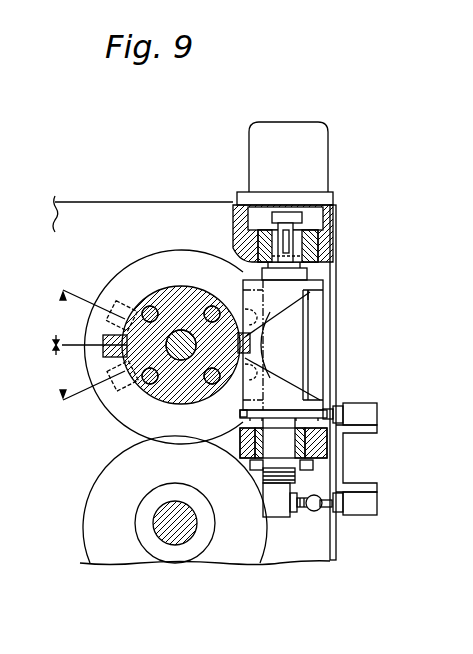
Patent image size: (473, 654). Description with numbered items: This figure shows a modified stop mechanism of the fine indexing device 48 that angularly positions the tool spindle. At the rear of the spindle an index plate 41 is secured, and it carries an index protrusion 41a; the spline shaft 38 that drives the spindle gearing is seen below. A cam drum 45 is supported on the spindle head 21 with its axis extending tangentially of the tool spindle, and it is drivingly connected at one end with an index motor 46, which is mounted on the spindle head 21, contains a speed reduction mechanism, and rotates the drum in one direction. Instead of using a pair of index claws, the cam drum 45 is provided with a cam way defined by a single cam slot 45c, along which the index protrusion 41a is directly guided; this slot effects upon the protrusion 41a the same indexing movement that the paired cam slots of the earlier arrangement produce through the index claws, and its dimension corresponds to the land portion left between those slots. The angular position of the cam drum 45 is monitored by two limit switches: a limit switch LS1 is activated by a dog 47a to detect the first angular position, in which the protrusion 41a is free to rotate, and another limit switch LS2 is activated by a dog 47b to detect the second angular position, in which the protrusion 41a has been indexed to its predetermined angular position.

The spindle head 21 is at (230, 202).
The spline shaft 38 is at (178, 538).
The index plate 41 is at (163, 300).
The protrusion 41a is at (230, 300).
The cam drum 45 is at (283, 388).
The cam slot 45c is at (314, 300).
The index motor 46 is at (319, 168).
The dog 47a is at (240, 412).
The dog 47b is at (318, 512).
The fine indexing device 48 is at (338, 253).
The limit switch LS1 is at (378, 413).
The limit switch LS2 is at (378, 506).